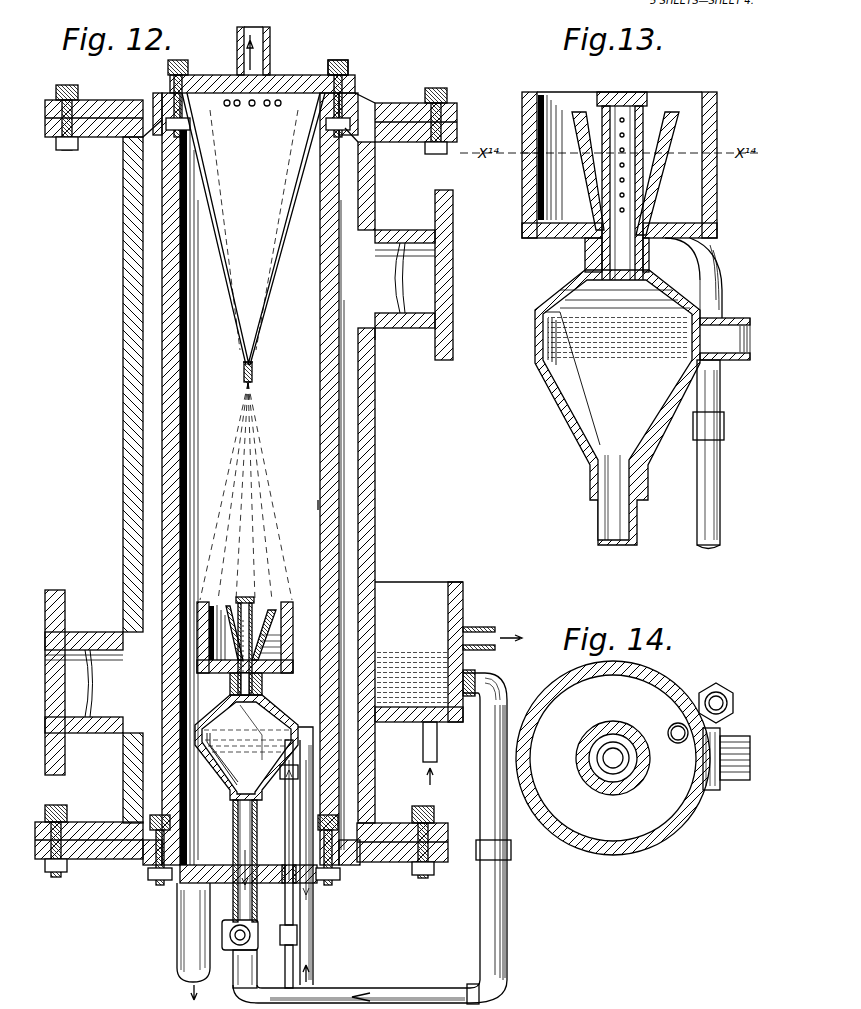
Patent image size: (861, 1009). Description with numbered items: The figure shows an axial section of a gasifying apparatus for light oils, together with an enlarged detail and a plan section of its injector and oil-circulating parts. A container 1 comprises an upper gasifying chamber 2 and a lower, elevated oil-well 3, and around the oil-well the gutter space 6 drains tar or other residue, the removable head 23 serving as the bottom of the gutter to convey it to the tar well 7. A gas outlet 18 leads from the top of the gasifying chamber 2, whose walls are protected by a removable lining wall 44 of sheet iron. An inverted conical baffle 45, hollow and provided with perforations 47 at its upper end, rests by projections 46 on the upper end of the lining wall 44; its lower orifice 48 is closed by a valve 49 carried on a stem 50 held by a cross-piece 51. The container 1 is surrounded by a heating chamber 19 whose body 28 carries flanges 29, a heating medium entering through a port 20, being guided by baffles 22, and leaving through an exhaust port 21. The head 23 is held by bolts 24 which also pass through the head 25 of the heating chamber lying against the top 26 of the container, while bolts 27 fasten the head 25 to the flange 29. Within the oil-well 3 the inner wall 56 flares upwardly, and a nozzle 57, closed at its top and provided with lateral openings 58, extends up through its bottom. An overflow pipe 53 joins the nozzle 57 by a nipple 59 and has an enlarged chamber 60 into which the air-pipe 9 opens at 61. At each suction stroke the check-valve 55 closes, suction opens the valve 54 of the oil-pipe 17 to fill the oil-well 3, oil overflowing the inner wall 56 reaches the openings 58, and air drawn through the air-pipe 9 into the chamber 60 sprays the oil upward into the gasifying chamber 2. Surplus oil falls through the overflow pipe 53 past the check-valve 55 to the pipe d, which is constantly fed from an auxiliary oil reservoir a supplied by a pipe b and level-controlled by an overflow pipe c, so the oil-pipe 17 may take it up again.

In FIG. 12, the container 1 is at (345, 440).
In FIG. 12, the gasifying chamber 2 is at (246, 491).
In FIG. 12, the oil-well 3 is at (298, 640).
In FIG. 13, the oil-well 3 is at (682, 127).
In FIG. 14, the oil-well 3 is at (613, 758).
In FIG. 12, the gutter 6 is at (340, 612).
In FIG. 12, the tar well 7 is at (185, 953).
In FIG. 12, the air-pipe 9 is at (297, 912).
In FIG. 13, the air-pipe 9 is at (752, 336).
In FIG. 12, the oil-pipe 17 is at (307, 955).
In FIG. 13, the oil-pipe 17 is at (712, 458).
In FIG. 14, the oil-pipe 17 is at (716, 695).
In FIG. 12, the gas outlet 18 is at (268, 42).
In FIG. 12, the heating chamber 19 is at (160, 440).
In FIG. 12, the port 20 is at (425, 285).
In FIG. 12, the exhaust port 21 is at (84, 682).
In FIG. 12, the baffles 22 is at (467, 807).
In FIG. 12, the removable head 23 is at (350, 92).
In FIG. 12, the bolts 24 is at (170, 78).
In FIG. 12, the head for the heating chamber 25 is at (118, 110).
In FIG. 12, the top of the container 26 is at (150, 140).
In FIG. 12, the bolts 27 is at (68, 92).
In FIG. 12, the body of the heating chamber 28 is at (375, 393).
In FIG. 12, the flange 29 is at (115, 118).
In FIG. 12, the removable lining wall 44 is at (320, 500).
In FIG. 12, the inverted conical baffle 45 is at (253, 229).
In FIG. 12, the projections 46 is at (215, 88).
In FIG. 12, the perforations 47 is at (255, 108).
In FIG. 12, the orifice 48 is at (254, 376).
In FIG. 12, the valve 49 is at (248, 383).
In FIG. 12, the stem 50 is at (243, 376).
In FIG. 12, the cross-piece 51 is at (243, 366).
In FIG. 12, the overflow pipe 53 is at (236, 820).
In FIG. 13, the overflow pipe 53 is at (615, 518).
In FIG. 12, the valve 54 is at (297, 938).
In FIG. 12, the check-valve 55 is at (225, 933).
In FIG. 12, the inner wall 56 is at (262, 612).
In FIG. 13, the inner wall 56 is at (598, 165).
In FIG. 14, the inner wall 56 is at (580, 762).
In FIG. 12, the nozzle 57 is at (246, 597).
In FIG. 13, the nozzle 57 is at (625, 178).
In FIG. 14, the nozzle 57 is at (602, 775).
In FIG. 12, the lateral openings 58 is at (232, 612).
In FIG. 13, the lateral openings 58 is at (600, 150).
In FIG. 14, the lateral openings 58 is at (627, 772).
In FIG. 12, the nipple 59 is at (236, 690).
In FIG. 13, the nipple 59 is at (600, 260).
In FIG. 12, the enlarged chamber 60 is at (246, 747).
In FIG. 13, the enlarged chamber 60 is at (617, 407).
In FIG. 12, the air-pipe opening 61 is at (448, 738).
In FIG. 13, the air-pipe opening 61 is at (725, 318).
In FIG. 14, the air-pipe opening 61 is at (735, 738).
In FIG. 12, the auxiliary oil reservoir a is at (462, 622).
In FIG. 12, the pipe b is at (438, 745).
In FIG. 12, the overflow pipe c is at (500, 655).
In FIG. 12, the pipe d is at (418, 988).